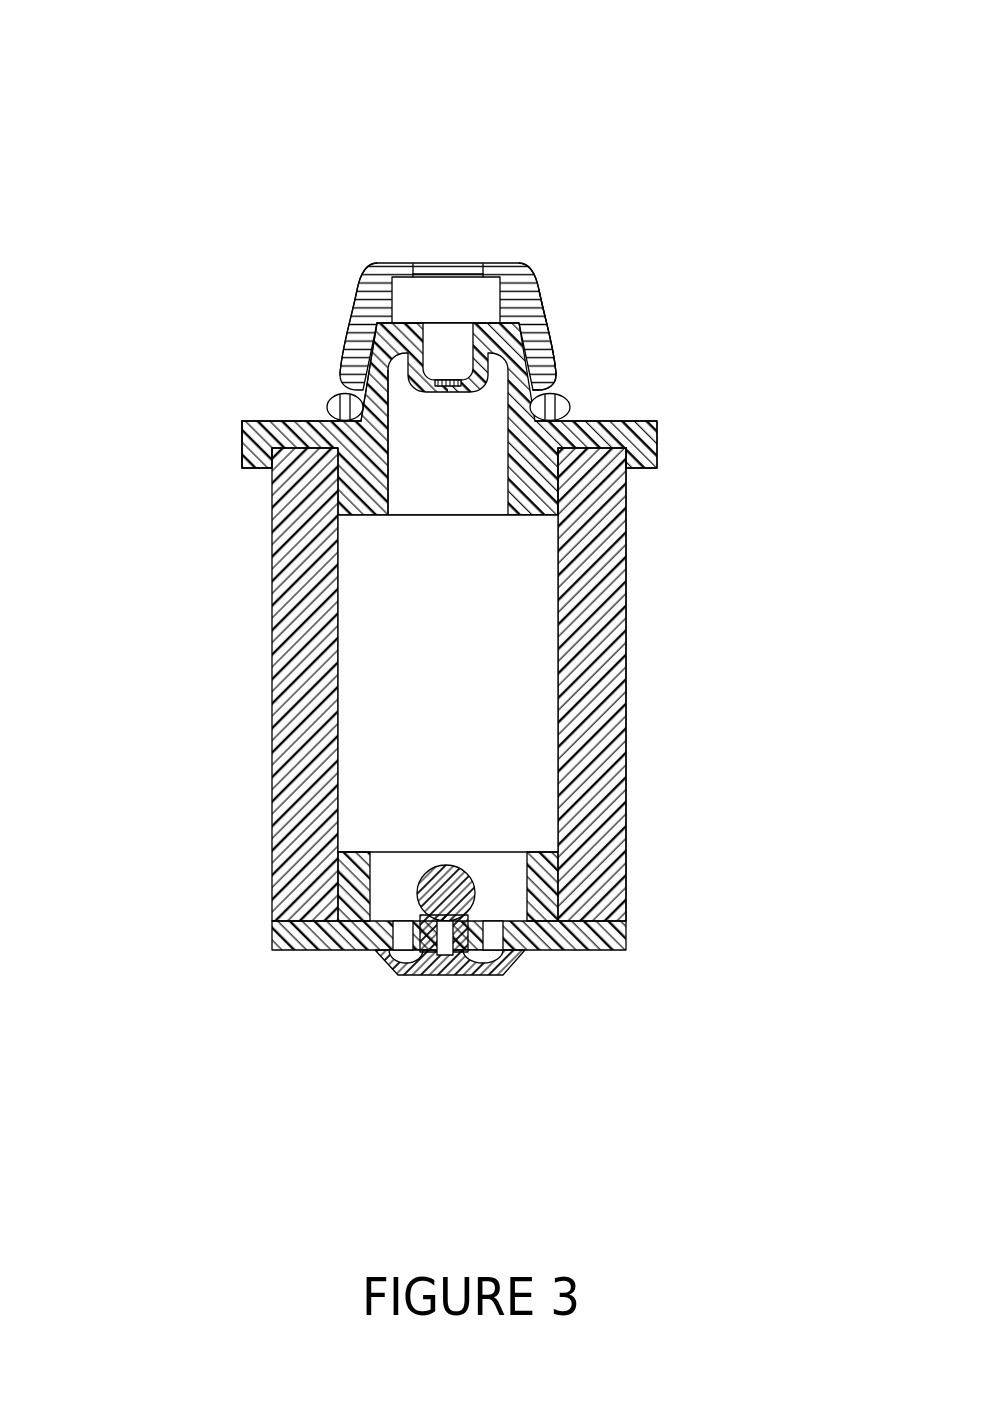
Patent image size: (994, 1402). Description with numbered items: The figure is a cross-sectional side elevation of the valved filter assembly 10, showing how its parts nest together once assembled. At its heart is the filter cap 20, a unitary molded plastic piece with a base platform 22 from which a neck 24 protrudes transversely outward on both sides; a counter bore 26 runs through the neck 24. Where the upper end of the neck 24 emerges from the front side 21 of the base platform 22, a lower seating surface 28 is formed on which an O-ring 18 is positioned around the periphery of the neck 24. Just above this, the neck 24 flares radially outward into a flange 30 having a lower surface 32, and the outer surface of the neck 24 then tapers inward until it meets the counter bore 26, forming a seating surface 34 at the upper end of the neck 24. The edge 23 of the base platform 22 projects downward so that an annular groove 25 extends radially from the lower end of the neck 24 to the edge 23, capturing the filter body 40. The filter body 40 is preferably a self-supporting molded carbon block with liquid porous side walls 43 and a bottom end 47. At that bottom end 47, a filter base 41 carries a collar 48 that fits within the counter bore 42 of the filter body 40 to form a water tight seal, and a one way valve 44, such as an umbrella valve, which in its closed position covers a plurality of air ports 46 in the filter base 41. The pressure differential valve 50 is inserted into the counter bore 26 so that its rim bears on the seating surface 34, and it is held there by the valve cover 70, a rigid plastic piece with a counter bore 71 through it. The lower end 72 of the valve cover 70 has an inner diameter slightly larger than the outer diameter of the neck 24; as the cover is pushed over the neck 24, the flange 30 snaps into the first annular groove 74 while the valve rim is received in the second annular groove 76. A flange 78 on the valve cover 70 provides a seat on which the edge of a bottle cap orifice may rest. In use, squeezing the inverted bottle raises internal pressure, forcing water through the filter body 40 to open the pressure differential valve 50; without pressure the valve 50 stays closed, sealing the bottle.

The valved filter assembly 10 is at (461, 566).
The O-ring 18 is at (310, 418).
The filter cap 20 is at (461, 383).
The front side 21 is at (265, 420).
The base platform 22 is at (243, 421).
The edge 23 is at (240, 447).
The neck 24 is at (397, 478).
The annular groove 25 is at (575, 453).
The counter bore 26 is at (436, 457).
The lower seating surface 28 is at (620, 421).
The flange 30 is at (550, 341).
The lower surface 32 is at (353, 310).
The seating surface 34 is at (536, 287).
The filter body 40 is at (506, 786).
The filter base 41 is at (567, 1014).
The counter bore 42 is at (485, 621).
The liquid porous side walls 43 is at (627, 767).
The one way valve 44 is at (452, 1023).
The air ports 46 is at (376, 955).
The bottom end 47 is at (556, 887).
The collar 48 is at (376, 882).
The pressure differential valve 50 is at (435, 355).
The valve cover 70 is at (468, 198).
The counter bore 71 is at (423, 300).
The lower end 72 is at (553, 373).
The first annular groove 74 is at (345, 346).
The second annular groove 76 is at (495, 300).
The flange 78 is at (319, 374).